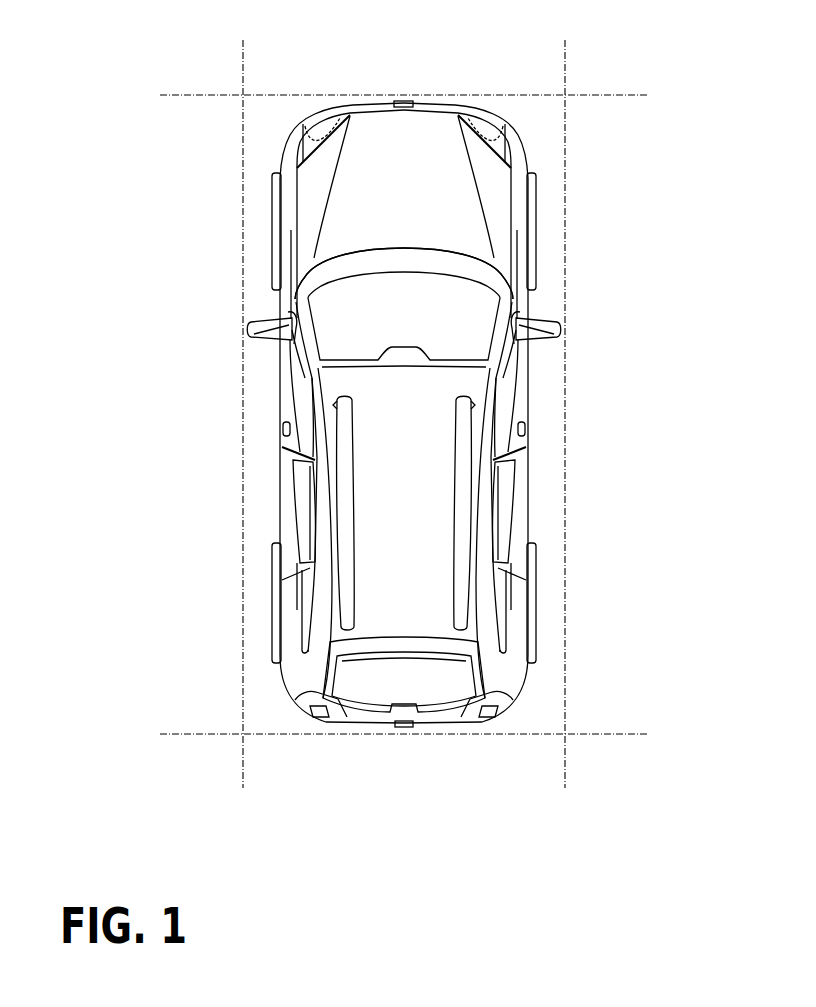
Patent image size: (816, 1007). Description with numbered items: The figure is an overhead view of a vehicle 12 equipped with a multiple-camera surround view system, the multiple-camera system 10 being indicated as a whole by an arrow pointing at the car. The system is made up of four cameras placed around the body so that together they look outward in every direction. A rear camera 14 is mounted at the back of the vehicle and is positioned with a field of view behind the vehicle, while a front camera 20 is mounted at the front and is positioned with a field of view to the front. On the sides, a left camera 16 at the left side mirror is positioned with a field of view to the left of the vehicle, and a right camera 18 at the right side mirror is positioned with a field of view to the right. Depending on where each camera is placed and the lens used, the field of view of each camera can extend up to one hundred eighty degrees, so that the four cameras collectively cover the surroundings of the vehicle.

The multiple-camera system 10 is at (643, 164).
The vehicle 12 is at (399, 304).
The rear camera 14 is at (405, 727).
The left camera 16 is at (248, 330).
The right camera 18 is at (562, 328).
The front camera 20 is at (405, 101).